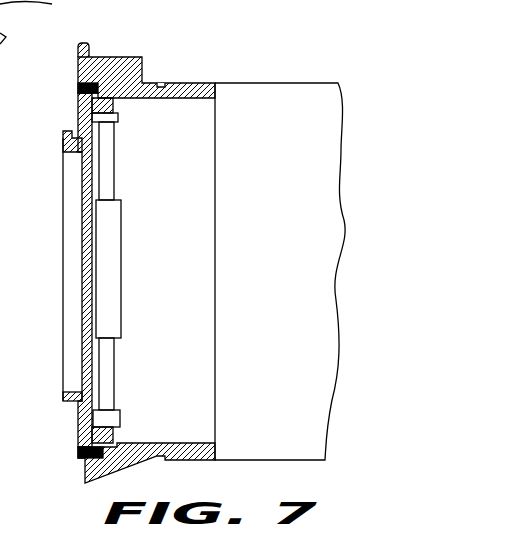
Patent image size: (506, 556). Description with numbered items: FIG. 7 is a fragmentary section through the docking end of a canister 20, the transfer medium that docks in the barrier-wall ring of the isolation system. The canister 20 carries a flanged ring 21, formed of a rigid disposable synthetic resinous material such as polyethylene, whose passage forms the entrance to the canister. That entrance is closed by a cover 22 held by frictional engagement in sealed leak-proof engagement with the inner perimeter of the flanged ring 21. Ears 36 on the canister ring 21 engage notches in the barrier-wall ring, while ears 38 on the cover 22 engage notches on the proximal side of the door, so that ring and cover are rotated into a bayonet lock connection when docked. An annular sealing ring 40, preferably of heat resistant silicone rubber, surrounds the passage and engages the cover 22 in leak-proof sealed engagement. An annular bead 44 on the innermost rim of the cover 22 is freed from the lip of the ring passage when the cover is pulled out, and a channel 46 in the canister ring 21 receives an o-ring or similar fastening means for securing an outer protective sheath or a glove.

The canister 20 is at (262, 460).
The flanged ring 21 is at (133, 55).
The cover 22 is at (63, 335).
The ears 36 is at (80, 43).
The ears 38 is at (63, 131).
The annular sealing ring 40 is at (78, 455).
The annular bead 44 is at (122, 432).
The channel 46 is at (161, 82).